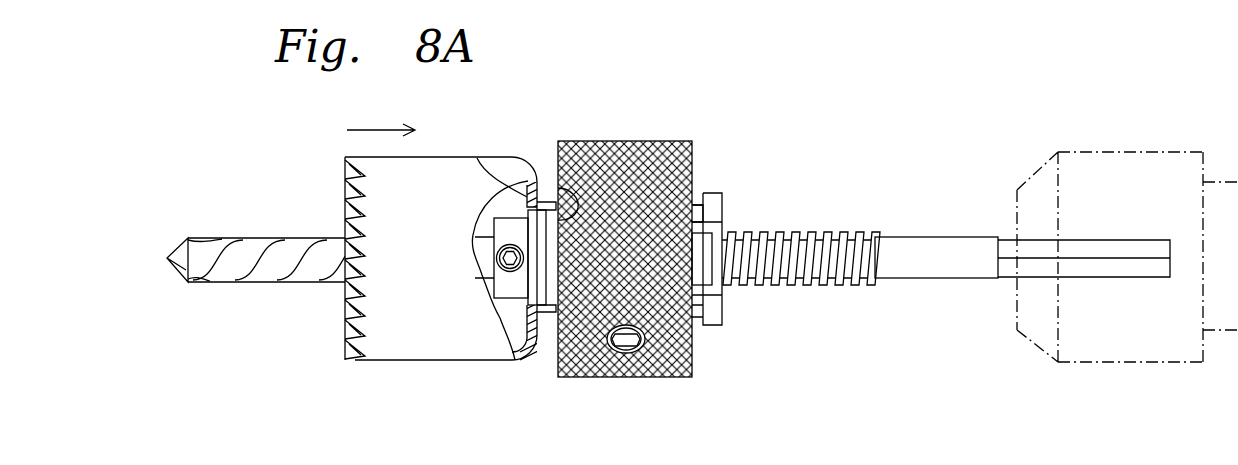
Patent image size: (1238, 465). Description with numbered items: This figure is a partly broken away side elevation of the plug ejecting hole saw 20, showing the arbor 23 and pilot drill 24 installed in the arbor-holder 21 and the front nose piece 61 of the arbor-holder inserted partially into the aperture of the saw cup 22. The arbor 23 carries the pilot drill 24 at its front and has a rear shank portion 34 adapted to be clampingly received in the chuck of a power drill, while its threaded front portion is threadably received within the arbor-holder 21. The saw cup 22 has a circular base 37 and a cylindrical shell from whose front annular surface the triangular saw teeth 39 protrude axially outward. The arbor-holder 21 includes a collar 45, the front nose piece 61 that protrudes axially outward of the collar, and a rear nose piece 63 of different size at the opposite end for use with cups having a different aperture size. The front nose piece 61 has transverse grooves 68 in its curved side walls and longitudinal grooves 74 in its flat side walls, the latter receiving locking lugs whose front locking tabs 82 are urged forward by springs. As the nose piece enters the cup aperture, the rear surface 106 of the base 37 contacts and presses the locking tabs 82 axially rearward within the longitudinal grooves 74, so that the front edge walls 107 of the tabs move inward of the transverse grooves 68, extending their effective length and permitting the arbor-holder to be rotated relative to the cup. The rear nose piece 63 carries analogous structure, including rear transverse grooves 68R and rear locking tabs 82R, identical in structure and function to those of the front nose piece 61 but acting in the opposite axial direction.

The plug ejecting hole saw 20 is at (643, 84).
The arbor-holder 21 is at (664, 126).
The saw cup 22 is at (416, 380).
The arbor 23 is at (950, 226).
The pilot drill 24 is at (208, 238).
The rear shank portion 34 is at (1008, 280).
The circular base 37 is at (541, 197).
The saw teeth 39 is at (345, 352).
The collar 45 is at (605, 141).
The front nose piece 61 is at (528, 305).
The rear nose piece 63 is at (721, 325).
The transverse grooves 68 is at (547, 313).
The rear tab 68R is at (697, 205).
The longitudinal grooves 74 is at (553, 202).
The front locking tabs 82 is at (546, 200).
The rear flange 82R is at (706, 272).
The rear surface 106 is at (540, 315).
The front edge walls 107 is at (484, 158).